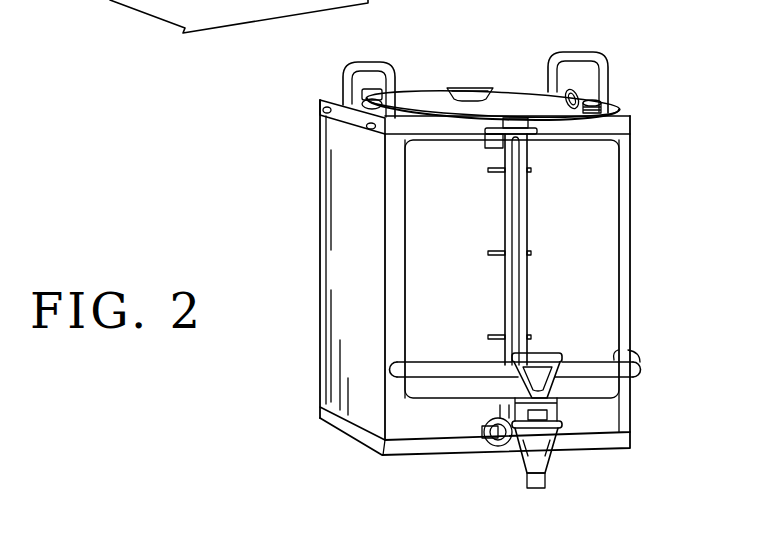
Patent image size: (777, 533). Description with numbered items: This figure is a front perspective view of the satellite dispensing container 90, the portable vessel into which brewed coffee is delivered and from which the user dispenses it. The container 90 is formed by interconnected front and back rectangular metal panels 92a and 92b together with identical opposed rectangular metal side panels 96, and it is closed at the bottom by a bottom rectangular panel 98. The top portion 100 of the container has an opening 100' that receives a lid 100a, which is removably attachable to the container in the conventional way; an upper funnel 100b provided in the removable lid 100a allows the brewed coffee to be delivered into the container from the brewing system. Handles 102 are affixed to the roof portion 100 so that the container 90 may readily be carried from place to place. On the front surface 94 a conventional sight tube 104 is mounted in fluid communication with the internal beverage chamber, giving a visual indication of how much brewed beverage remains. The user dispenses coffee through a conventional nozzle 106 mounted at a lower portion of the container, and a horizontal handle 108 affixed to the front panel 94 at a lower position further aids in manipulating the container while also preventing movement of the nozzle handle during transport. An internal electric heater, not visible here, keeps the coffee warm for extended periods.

The satellite dispensing container 90 is at (335, 322).
The front rectangular metal panel 92a is at (622, 257).
The back rectangular metal panel 92b is at (320, 163).
The front surface 94 is at (461, 246).
The side panels 96 is at (337, 280).
The bottom rectangular panel 98 is at (412, 447).
The top portion 100 is at (433, 110).
The lid 100a is at (413, 100).
The upper funnel 100b is at (484, 86).
The opening 100' is at (478, 177).
The handles 102 is at (357, 63).
The sight tube 104 is at (512, 277).
The nozzle 106 is at (542, 450).
The horizontal handle 108 is at (636, 358).